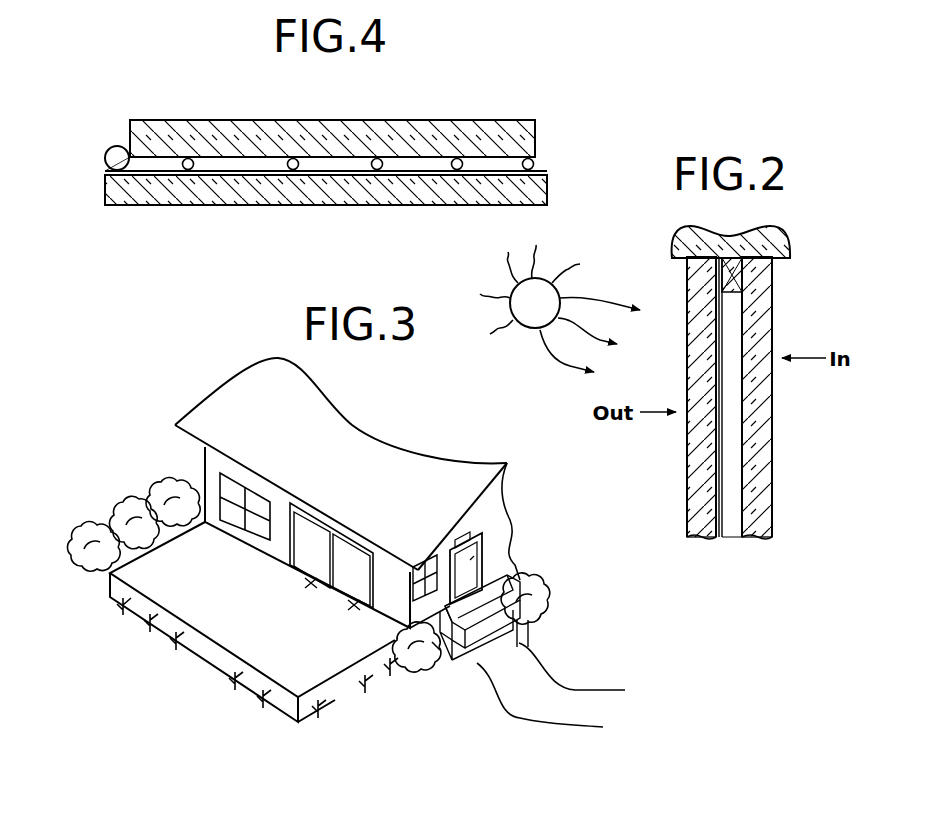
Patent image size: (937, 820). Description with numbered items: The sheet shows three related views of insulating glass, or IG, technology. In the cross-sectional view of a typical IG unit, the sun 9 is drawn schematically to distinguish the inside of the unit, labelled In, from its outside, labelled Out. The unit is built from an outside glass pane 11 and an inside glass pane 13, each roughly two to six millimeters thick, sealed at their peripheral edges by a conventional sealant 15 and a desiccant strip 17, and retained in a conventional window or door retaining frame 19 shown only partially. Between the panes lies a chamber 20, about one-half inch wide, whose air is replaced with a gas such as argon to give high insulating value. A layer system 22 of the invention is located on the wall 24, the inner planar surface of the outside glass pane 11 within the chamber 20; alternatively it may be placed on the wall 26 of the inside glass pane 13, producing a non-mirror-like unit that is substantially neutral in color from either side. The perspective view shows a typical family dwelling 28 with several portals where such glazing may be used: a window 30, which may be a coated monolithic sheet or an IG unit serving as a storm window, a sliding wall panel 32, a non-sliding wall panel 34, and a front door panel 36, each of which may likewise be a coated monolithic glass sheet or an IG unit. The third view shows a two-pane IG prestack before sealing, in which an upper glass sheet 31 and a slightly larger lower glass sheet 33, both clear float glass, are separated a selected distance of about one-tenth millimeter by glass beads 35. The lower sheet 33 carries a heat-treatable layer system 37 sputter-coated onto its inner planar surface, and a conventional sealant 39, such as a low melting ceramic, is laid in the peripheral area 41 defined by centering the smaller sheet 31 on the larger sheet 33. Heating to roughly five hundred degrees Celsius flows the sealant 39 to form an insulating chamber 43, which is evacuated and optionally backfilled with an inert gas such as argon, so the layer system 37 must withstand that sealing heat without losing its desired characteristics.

In FIG. 3, the sun 9 is at (530, 289).
In FIG. 2, the outside glass pane 11 is at (716, 468).
In FIG. 2, the inside glass pane 13 is at (768, 472).
In FIG. 2, the sealant 15 is at (735, 240).
In FIG. 2, the desiccant strip 17 is at (740, 290).
In FIG. 2, the retaining frame 19 is at (676, 240).
In FIG. 2, the chamber 20 is at (730, 537).
In FIG. 2, the layer system 22 is at (715, 376).
In FIG. 2, the wall 24 is at (716, 515).
In FIG. 2, the wall 26 is at (745, 430).
In FIG. 3, the family dwelling 28 is at (392, 428).
In FIG. 3, the window 30 is at (230, 488).
In FIG. 4, the upper glass sheet 31 is at (365, 128).
In FIG. 3, the sliding wall panel 32 is at (311, 583).
In FIG. 4, the lower glass sheet 33 is at (390, 200).
In FIG. 3, the non-sliding wall panel 34 is at (354, 605).
In FIG. 4, the glass beads 35 is at (190, 158).
In FIG. 3, the front door panel 36 is at (472, 567).
In FIG. 4, the layer system 37 is at (323, 175).
In FIG. 4, the sealant 39 is at (118, 146).
In FIG. 4, the peripheral area 41 is at (98, 160).
In FIG. 4, the insulating chamber 43 is at (337, 158).